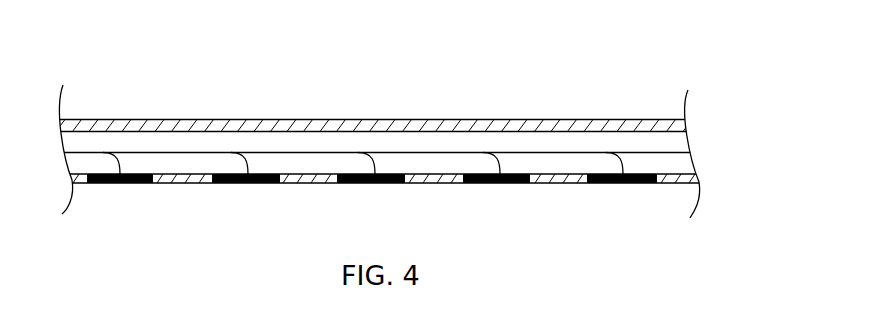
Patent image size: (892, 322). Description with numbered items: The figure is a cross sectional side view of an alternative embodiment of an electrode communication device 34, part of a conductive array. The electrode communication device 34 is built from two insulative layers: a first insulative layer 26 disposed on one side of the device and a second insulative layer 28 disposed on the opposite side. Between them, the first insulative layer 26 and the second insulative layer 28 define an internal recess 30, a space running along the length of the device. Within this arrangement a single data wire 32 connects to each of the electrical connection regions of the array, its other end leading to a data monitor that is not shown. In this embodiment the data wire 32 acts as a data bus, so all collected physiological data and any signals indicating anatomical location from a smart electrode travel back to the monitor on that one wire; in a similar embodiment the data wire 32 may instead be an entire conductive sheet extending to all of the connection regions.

The first insulative layer 26 is at (637, 118).
The second insulative layer 28 is at (399, 200).
The internal recess 30 is at (662, 142).
The data wire 32 is at (283, 151).
The electrode communication device 34 is at (399, 124).